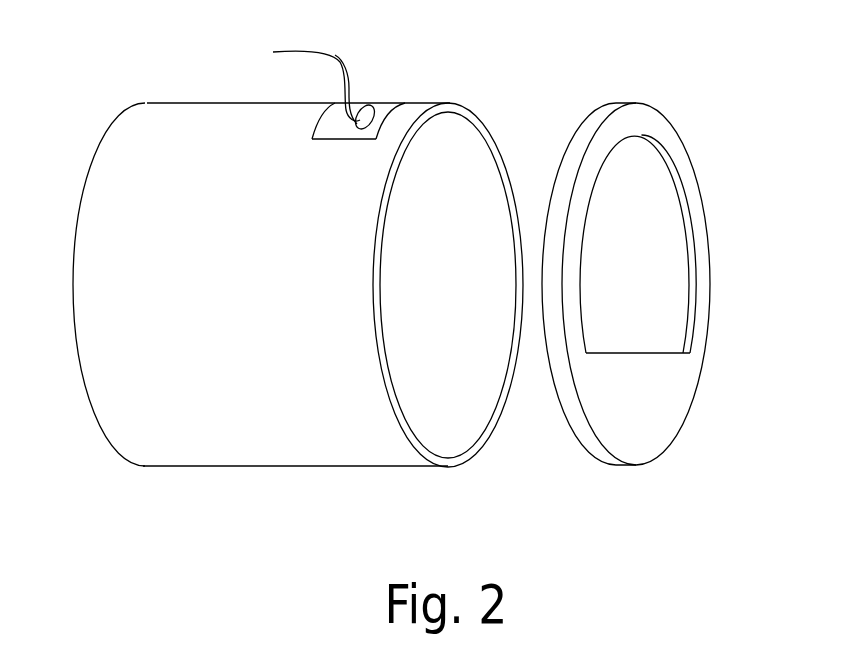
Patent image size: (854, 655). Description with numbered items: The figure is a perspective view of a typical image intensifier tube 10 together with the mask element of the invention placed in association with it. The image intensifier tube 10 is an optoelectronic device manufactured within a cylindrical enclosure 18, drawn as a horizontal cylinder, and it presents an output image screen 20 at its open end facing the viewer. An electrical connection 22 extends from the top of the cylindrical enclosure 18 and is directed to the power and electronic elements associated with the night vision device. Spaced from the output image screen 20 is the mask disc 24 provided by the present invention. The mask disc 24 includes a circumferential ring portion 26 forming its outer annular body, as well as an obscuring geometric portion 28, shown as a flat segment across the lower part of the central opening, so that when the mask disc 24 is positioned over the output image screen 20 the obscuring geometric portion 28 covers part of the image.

The image intensifier tube 10 is at (65, 102).
The cylindrical enclosure 18 is at (288, 452).
The output image screen 20 is at (407, 262).
The electrical connection 22 is at (343, 64).
The mask disc 24 is at (745, 422).
The circumferential ring portion 26 is at (683, 163).
The obscuring geometric portion 28 is at (652, 380).